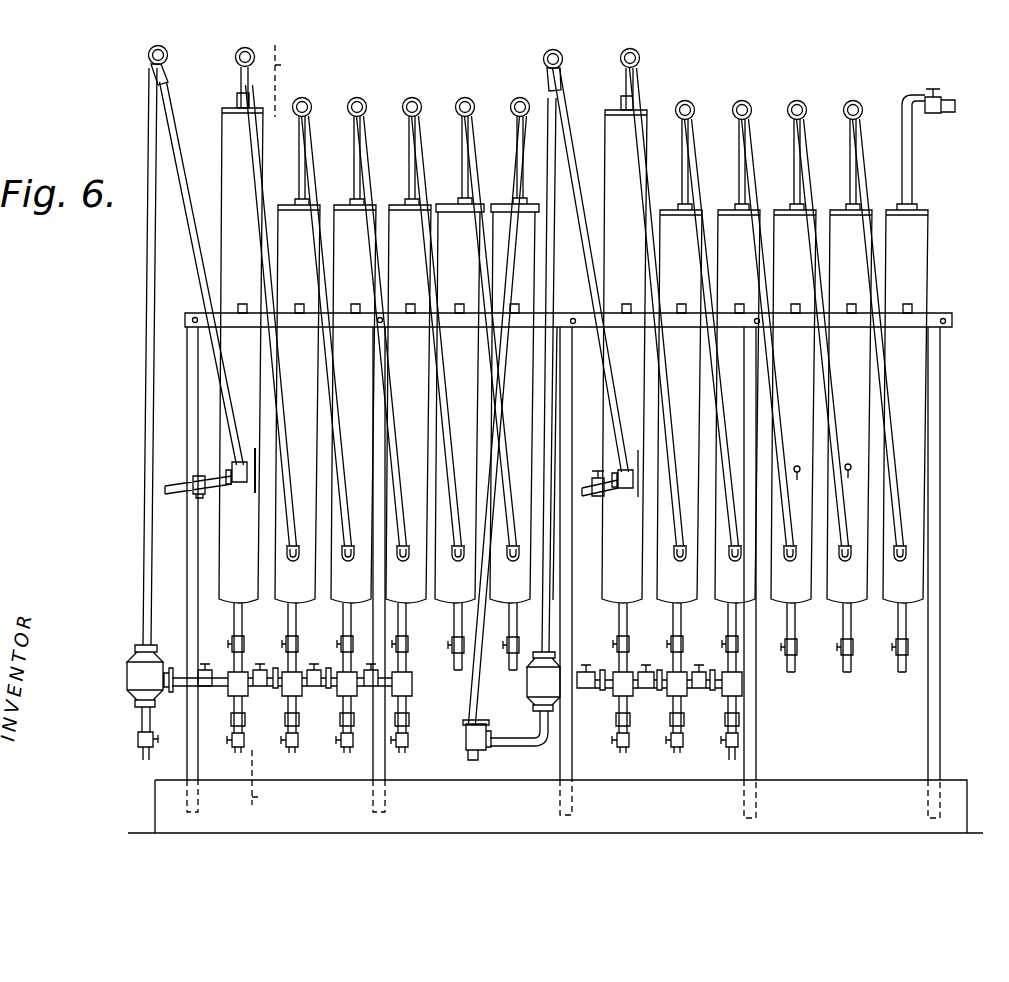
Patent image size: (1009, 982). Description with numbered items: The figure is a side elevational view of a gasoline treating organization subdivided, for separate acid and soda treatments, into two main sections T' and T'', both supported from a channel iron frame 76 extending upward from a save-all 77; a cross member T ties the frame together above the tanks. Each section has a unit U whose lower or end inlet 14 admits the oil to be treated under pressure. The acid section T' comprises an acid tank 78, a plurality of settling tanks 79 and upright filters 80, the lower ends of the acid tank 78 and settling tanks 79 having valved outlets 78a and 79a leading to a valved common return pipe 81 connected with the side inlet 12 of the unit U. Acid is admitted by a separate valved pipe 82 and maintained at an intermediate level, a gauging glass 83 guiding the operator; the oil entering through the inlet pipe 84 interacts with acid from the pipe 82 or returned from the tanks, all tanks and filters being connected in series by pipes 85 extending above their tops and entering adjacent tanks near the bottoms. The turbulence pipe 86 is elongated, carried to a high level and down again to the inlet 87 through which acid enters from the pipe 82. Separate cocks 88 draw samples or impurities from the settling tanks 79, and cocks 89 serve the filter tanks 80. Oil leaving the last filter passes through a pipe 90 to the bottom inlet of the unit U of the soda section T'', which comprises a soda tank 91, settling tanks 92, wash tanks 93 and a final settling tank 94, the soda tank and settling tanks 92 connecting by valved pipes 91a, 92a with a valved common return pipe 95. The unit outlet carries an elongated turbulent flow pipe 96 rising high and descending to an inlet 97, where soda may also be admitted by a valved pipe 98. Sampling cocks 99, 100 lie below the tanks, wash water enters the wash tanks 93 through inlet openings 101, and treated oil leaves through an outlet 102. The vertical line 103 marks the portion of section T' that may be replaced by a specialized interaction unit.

The side inlet 12 is at (178, 668).
The lower or end inlet 14 is at (137, 709).
The channel iron frame 76 is at (190, 356).
The save-all 77 is at (843, 796).
The acid tank 78 is at (241, 326).
The valved outlet 78a is at (240, 633).
The settling tanks 79 is at (353, 351).
The valved outlets 79a is at (297, 633).
The upright filters 80 is at (487, 384).
The valved common return pipe 81 is at (229, 694).
The valved pipe 82 is at (212, 476).
The gauging glass 83 is at (255, 447).
The inlet pipe 84 is at (143, 727).
The pipes 85 is at (320, 304).
The turbulence pipe 86 is at (147, 590).
The inlet 87 is at (240, 484).
The cocks 88 is at (286, 740).
The cocks 89 is at (448, 645).
The pipe 90 is at (498, 378).
The soda tank 91 is at (624, 326).
The valved pipe 91a is at (627, 636).
The settling tanks 92 is at (708, 352).
The valved pipes 92a is at (682, 636).
The wash tanks 93 is at (821, 387).
The final settling tank 94 is at (905, 388).
The valved common return pipe 95 is at (603, 694).
The elongated turbulent flow pipe 96 is at (550, 416).
The inlet 97 is at (630, 489).
The valved pipe 98 is at (610, 471).
The sampling cocks 99 is at (622, 744).
The sampling cocks 100 is at (788, 656).
The inlet openings 101 is at (826, 483).
The outlet 102 is at (928, 106).
The vertical line 103 is at (286, 430).
The cross bar T is at (580, 307).
The acid section T' is at (332, 81).
The alkali or soda section T'' is at (790, 75).